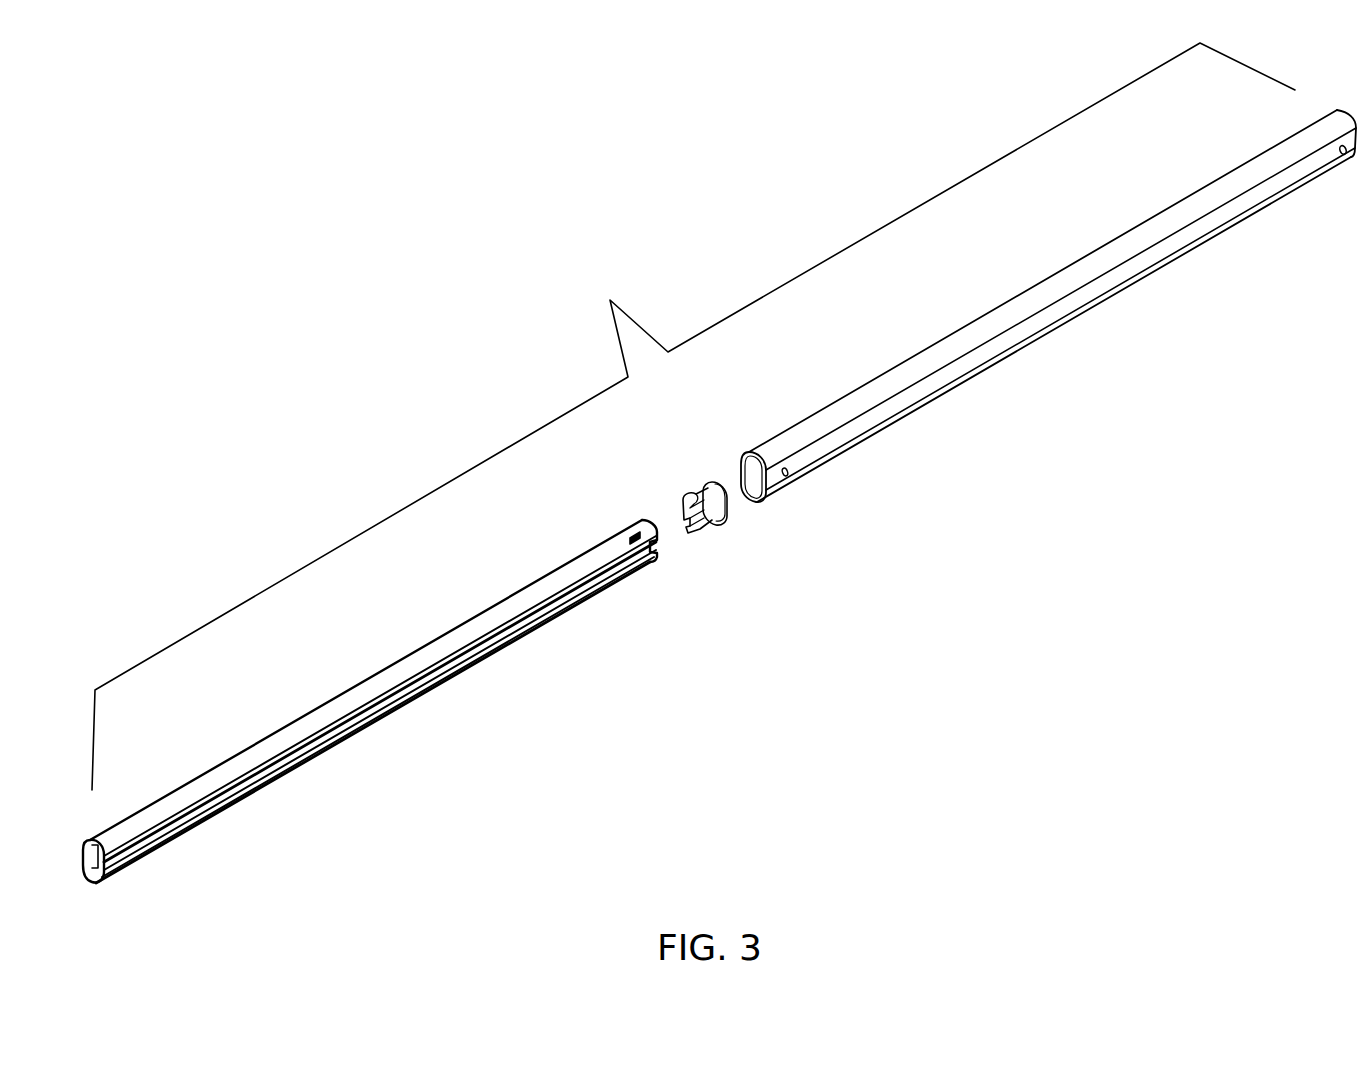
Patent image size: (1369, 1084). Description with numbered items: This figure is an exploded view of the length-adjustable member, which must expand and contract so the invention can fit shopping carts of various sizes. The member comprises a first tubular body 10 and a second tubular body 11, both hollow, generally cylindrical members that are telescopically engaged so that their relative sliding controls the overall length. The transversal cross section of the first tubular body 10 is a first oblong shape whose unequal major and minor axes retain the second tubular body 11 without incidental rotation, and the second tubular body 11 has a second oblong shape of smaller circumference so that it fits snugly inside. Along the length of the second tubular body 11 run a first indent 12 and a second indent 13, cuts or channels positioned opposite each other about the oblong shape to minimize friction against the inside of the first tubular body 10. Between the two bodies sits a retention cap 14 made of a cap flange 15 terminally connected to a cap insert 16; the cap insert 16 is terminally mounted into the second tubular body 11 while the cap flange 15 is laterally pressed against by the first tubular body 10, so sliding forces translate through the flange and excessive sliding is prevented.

The first tubular body 10 is at (1007, 315).
The second tubular body 11 is at (328, 715).
The first indent 12 is at (141, 846).
The second indent 13 is at (88, 855).
The retention cap 14 is at (688, 535).
The cap flange 15 is at (728, 512).
The cap insert 16 is at (700, 533).